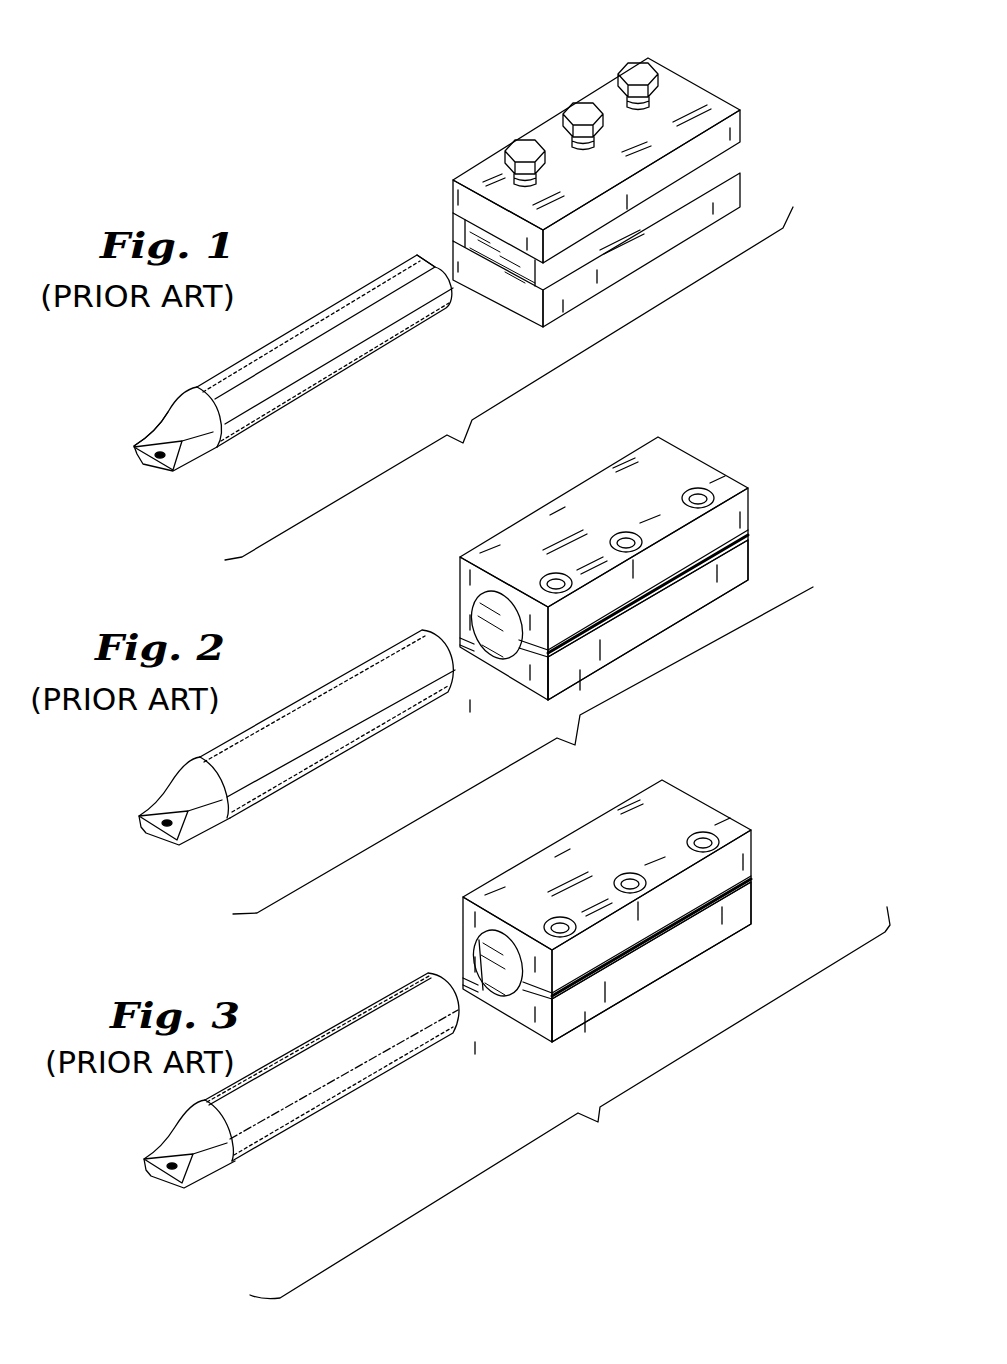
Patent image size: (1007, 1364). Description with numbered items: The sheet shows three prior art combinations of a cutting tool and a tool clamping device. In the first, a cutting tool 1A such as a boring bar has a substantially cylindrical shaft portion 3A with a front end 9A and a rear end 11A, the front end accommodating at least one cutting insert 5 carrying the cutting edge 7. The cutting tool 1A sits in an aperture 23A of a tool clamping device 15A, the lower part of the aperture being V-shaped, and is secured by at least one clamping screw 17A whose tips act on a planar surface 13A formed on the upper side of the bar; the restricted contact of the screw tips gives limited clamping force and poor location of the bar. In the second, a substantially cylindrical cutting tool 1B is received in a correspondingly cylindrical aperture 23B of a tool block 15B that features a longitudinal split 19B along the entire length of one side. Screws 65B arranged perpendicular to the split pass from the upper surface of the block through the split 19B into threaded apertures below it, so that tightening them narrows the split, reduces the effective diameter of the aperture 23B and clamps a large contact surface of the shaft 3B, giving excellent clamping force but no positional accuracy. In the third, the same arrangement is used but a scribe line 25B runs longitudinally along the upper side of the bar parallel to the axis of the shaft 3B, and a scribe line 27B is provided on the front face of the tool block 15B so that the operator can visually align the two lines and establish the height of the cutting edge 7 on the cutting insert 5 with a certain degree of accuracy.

In FIG. 1, the cutting tool 1A is at (275, 344).
In FIG. 1, the shaft portion 3A is at (325, 294).
In FIG. 1, the cutting insert 5 is at (153, 466).
In FIG. 2, the cutting insert 5 is at (157, 840).
In FIG. 3, the cutting insert 5 is at (162, 1183).
In FIG. 1, the cutting edge 7 is at (178, 467).
In FIG. 2, the cutting edge 7 is at (177, 838).
In FIG. 3, the cutting edge 7 is at (182, 1181).
In FIG. 1, the front end 9A is at (182, 420).
In FIG. 1, the rear end 11A is at (425, 255).
In FIG. 1, the planar surface 13A is at (353, 302).
In FIG. 1, the tool clamping device 15A is at (611, 196).
In FIG. 1, the clamping screw 17A is at (633, 80).
In FIG. 1, the aperture 23A is at (467, 257).
In FIG. 2, the cutting tool 1B is at (288, 764).
In FIG. 3, the cutting tool 1B is at (294, 1090).
In FIG. 2, the shaft 3B is at (305, 755).
In FIG. 3, the shaft 3B is at (332, 1042).
In FIG. 2, the tool block 15B is at (609, 552).
In FIG. 3, the tool block 15B is at (606, 895).
In FIG. 2, the longitudinal split 19B is at (745, 537).
In FIG. 3, the longitudinal split 19B is at (748, 878).
In FIG. 2, the aperture 23B is at (470, 610).
In FIG. 3, the aperture 23B is at (455, 917).
In FIG. 2, the screws 65B is at (712, 488).
In FIG. 3, the screws 65B is at (712, 832).
In FIG. 3, the scribe line 25B is at (363, 1010).
In FIG. 3, the scribe line 27B is at (468, 948).